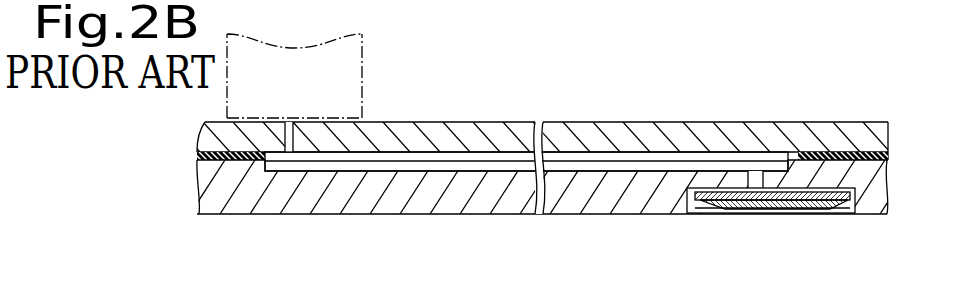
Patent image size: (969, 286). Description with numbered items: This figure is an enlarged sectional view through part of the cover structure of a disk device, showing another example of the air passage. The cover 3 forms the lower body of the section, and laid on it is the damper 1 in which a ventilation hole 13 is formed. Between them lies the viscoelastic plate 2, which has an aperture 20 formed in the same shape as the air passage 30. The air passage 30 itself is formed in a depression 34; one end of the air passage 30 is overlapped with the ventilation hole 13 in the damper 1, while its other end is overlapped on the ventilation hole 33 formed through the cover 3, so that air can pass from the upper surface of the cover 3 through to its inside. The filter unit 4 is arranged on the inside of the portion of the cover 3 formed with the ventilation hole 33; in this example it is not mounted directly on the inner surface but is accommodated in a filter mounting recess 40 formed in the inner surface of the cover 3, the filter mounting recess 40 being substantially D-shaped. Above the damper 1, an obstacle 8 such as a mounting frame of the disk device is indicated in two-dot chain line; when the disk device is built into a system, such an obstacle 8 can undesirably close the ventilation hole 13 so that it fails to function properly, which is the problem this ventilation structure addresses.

The damper 1 is at (606, 140).
The viscoelastic plate 2 is at (835, 150).
The cover 3 is at (537, 214).
The filter unit 4 is at (774, 237).
The obstacle 8 is at (362, 53).
The ventilation hole 13 is at (291, 118).
The aperture 20 is at (468, 157).
The air passage 30 is at (487, 167).
The ventilation hole 33 is at (757, 178).
The depression 34 is at (235, 165).
The filter mounting recess 40 is at (849, 190).